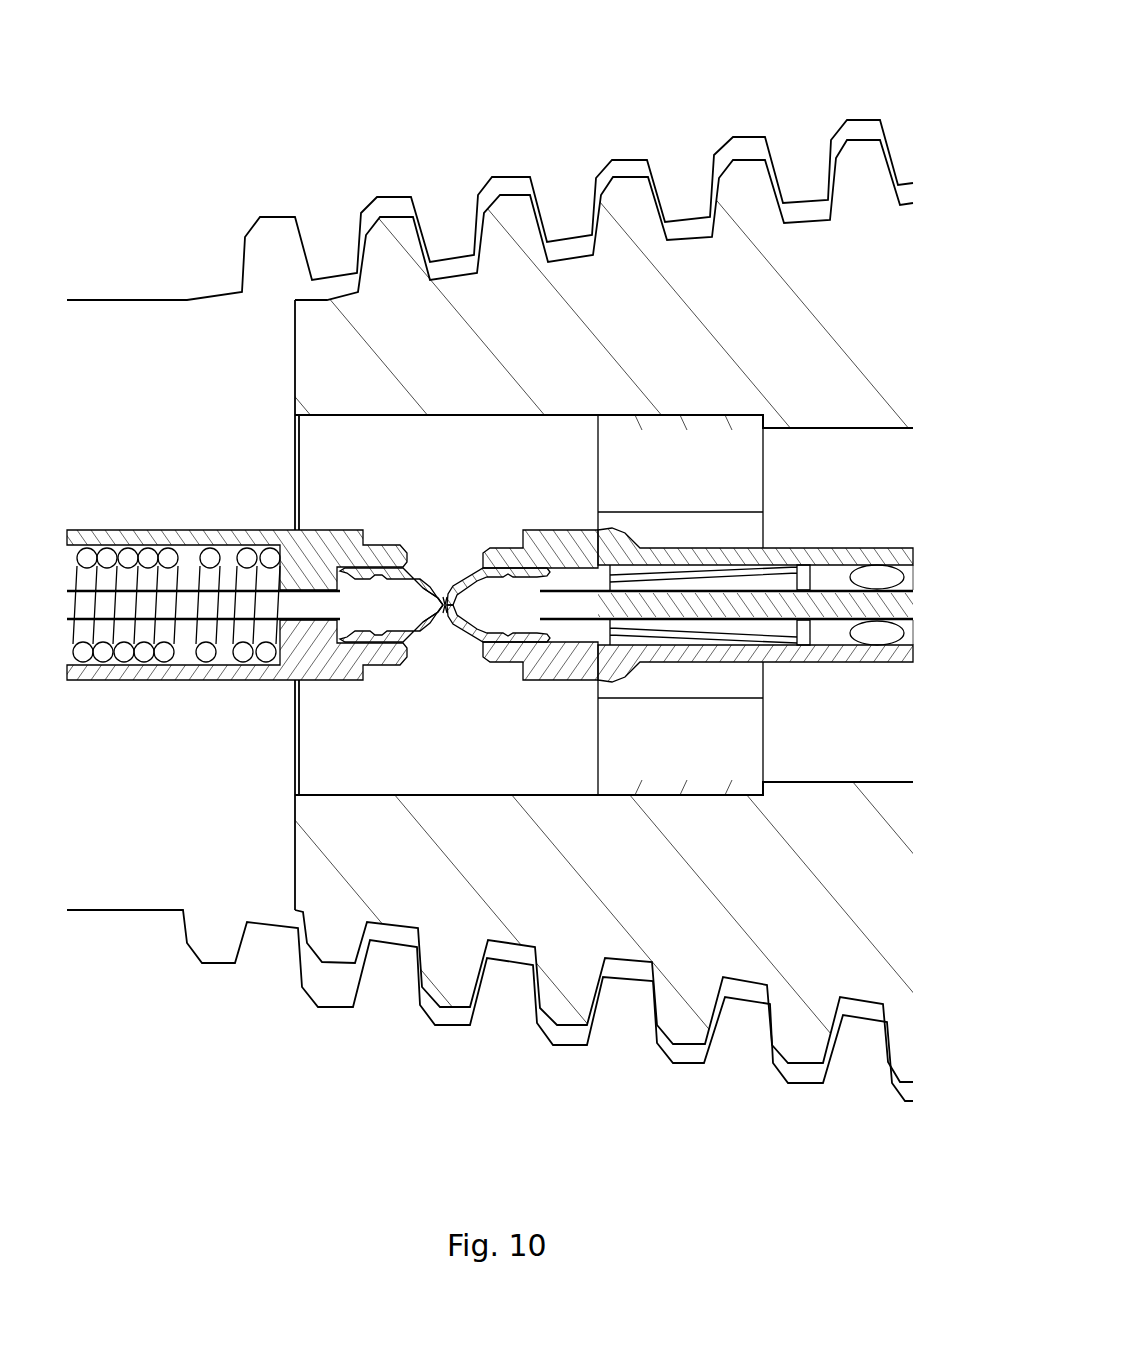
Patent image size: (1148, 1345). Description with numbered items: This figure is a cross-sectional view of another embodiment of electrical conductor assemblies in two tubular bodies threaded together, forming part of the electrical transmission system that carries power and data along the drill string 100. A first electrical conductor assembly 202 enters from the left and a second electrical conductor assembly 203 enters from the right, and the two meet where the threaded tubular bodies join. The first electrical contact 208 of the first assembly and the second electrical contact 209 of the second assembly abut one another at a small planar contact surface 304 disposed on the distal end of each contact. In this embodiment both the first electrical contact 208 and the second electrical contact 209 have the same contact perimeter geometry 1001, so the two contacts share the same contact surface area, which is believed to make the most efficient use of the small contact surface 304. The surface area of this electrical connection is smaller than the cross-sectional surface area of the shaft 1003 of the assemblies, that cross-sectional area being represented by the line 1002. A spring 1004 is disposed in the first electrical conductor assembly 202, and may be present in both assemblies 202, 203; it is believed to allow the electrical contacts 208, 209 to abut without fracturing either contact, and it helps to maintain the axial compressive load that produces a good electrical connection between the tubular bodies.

The drill string 100 is at (259, 128).
The first electrical conductor assembly 202 is at (205, 500).
The second electrical conductor assembly 203 is at (787, 522).
The first electrical contact 208 is at (421, 659).
The second electrical contact 209 is at (460, 552).
The contact surface 304 is at (444, 614).
The contact perimeter geometry 1001 is at (434, 572).
The line representing cross-sectional surface area 1002 is at (697, 590).
The shaft 1003 is at (830, 574).
The spring 1004 is at (179, 668).